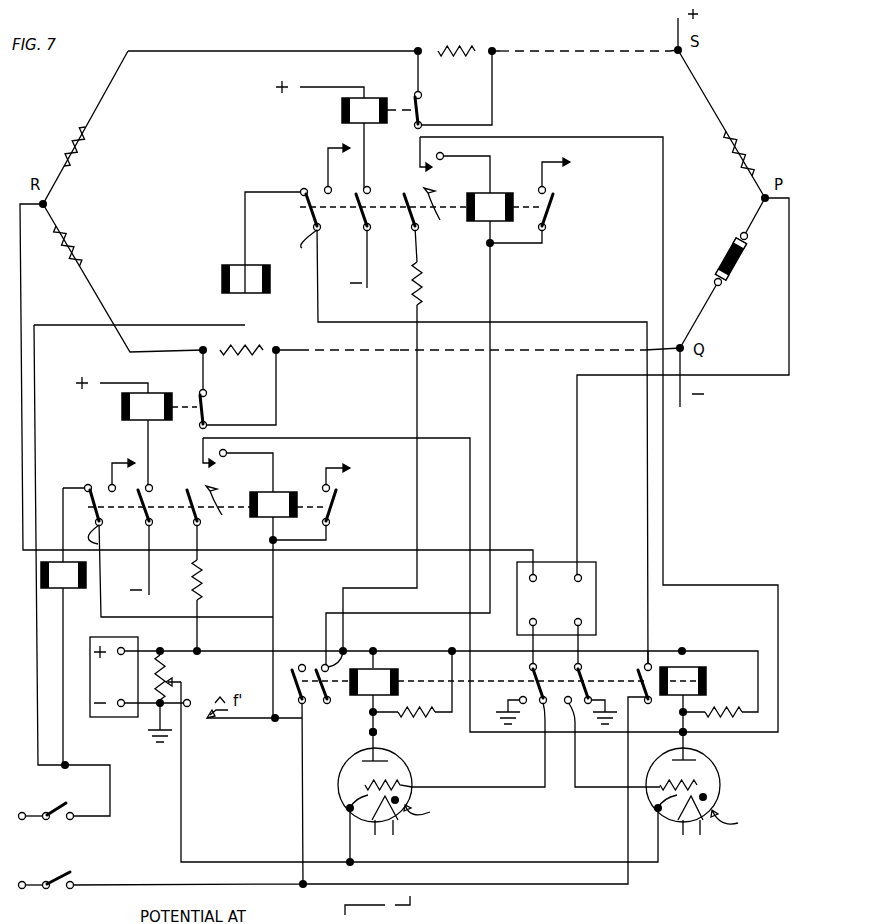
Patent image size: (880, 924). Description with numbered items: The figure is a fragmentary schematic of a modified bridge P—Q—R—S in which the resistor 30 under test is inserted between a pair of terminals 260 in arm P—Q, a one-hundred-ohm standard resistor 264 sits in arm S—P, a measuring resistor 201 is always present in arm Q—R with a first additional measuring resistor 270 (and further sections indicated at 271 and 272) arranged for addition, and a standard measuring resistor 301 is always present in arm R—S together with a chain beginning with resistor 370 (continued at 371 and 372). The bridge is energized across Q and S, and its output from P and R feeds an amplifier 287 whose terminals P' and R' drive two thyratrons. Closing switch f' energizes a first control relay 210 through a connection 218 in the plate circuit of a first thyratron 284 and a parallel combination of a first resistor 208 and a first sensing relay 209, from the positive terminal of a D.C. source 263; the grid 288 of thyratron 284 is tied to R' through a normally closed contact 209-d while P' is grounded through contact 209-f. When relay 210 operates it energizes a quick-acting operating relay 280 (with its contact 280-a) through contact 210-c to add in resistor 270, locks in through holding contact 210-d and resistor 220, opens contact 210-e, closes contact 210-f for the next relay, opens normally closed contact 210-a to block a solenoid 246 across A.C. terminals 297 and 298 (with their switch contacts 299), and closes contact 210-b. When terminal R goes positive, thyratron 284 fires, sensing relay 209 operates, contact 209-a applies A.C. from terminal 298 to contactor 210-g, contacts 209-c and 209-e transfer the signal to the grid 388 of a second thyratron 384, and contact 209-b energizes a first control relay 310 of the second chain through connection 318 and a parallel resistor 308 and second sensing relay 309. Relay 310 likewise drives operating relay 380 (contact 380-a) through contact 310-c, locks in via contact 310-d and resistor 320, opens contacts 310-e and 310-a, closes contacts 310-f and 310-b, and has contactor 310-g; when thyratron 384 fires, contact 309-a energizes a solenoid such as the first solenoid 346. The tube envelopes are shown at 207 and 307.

The resistor under test 30 is at (722, 250).
The measuring resistor 201 is at (80, 244).
The electron tube 207 is at (362, 756).
The first resistor 208 is at (420, 718).
The first sensing relay 209 is at (475, 682).
The first contact of sensing relay 209-a is at (298, 666).
The contact of sensing relay 209-b is at (345, 658).
The contact of sensing relay 209-c is at (520, 700).
The normally closed contact of sensing relay 209-d is at (542, 720).
The contact of sensing relay 209-e is at (572, 720).
The normally closed contact of sensing relay 209-f is at (640, 665).
The first control relay 210 is at (207, 504).
The normally closed contact 210-a is at (85, 484).
The normally open contact 210-b is at (110, 484).
The contact 210-c is at (168, 516).
The holding contact 210-d is at (222, 513).
The contact 210-e is at (192, 460).
The contact 210-f is at (330, 485).
The contactor of first operating relay 210-g is at (117, 537).
The connection in plate circuit 218 is at (370, 732).
The resistor 220 is at (203, 578).
The solenoid 246 is at (63, 575).
The terminals 260 is at (740, 233).
The D.C. source 263 is at (140, 677).
The standard resistor 264 is at (745, 152).
The measuring resistor 270 is at (244, 347).
The resistor section 271 is at (335, 350).
The resistor section 272 is at (405, 350).
The quick-acting operating relay 280 is at (159, 406).
The relay contact 280-a is at (238, 389).
The first thyratron 284 is at (433, 808).
The amplifier 287 is at (600, 590).
The grid of first thyratron 288 is at (395, 778).
The A.C. terminal 297 is at (24, 822).
The A.C. terminal 298 is at (24, 890).
The switch contact 299 is at (52, 808).
The standard measuring resistor 301 is at (70, 146).
The electron tube 307 is at (700, 760).
The resistor 308 is at (722, 718).
The second sensing relay 309 is at (683, 681).
The contact of second sensing relay 309-a is at (652, 662).
The first control relay of second chain 310 is at (421, 207).
The contact 310-a is at (302, 188).
The contact 310-b is at (319, 166).
The contact 310-c is at (385, 224).
The contact 310-d is at (437, 217).
The contact 310-e is at (428, 168).
The contact 310-f is at (550, 186).
The relay contact 310-g is at (289, 243).
The connection in plate circuit 318 is at (680, 733).
The resistor 320 is at (422, 282).
The first solenoid 346 is at (246, 279).
The measuring resistor 370 is at (458, 45).
The resistor section 371 is at (530, 50).
The resistor section 372 is at (578, 50).
The quick-acting operating relay 380 is at (377, 110).
The relay contact 380-a is at (420, 95).
The second thyratron 384 is at (740, 821).
The grid of second thyratron 388 is at (700, 784).